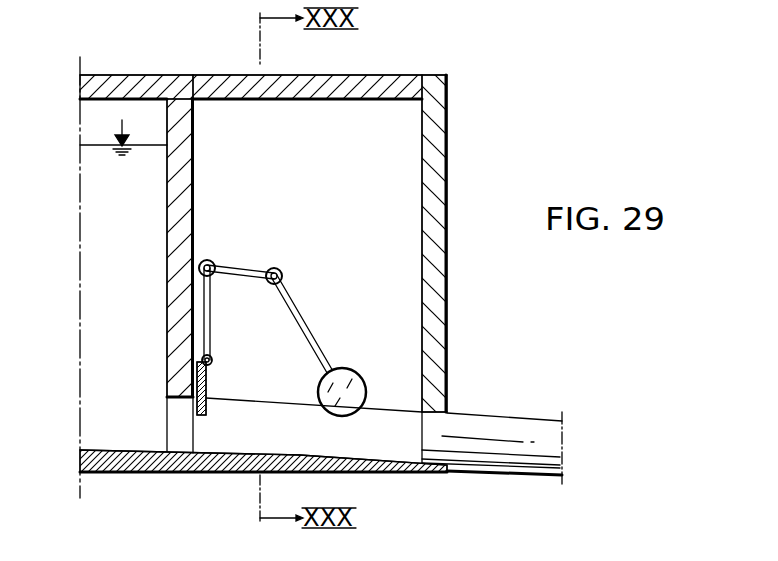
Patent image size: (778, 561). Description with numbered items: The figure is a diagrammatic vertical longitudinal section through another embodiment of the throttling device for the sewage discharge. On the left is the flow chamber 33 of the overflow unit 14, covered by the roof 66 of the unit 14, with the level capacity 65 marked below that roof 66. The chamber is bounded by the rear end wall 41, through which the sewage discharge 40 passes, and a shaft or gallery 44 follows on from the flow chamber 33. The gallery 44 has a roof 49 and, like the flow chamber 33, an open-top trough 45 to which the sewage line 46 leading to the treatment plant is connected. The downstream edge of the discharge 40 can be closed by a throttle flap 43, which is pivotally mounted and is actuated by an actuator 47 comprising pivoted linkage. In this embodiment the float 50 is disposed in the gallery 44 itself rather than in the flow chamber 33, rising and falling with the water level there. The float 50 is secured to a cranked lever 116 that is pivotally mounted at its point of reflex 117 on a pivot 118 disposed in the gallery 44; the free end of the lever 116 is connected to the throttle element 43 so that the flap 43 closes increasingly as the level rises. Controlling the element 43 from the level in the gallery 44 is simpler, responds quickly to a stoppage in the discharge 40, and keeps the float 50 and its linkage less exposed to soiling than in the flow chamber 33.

The overflow unit 14 is at (186, 489).
The flow chamber 33 is at (105, 209).
The sewage discharge 40 is at (167, 422).
The rear end wall 41 is at (195, 208).
The throttle flap 43 is at (206, 405).
The shaft or gallery 44 is at (395, 172).
The open-top trough 45 is at (390, 445).
The sewage line 46 is at (515, 462).
The actuator 47 is at (253, 302).
The roof of gallery 49 is at (380, 83).
The float 50 is at (345, 372).
The level capacity 65 is at (123, 129).
The roof of the unit 66 is at (121, 85).
The cranked lever 116 is at (314, 306).
The point of reflex 117 is at (285, 280).
The pivot 118 is at (274, 267).